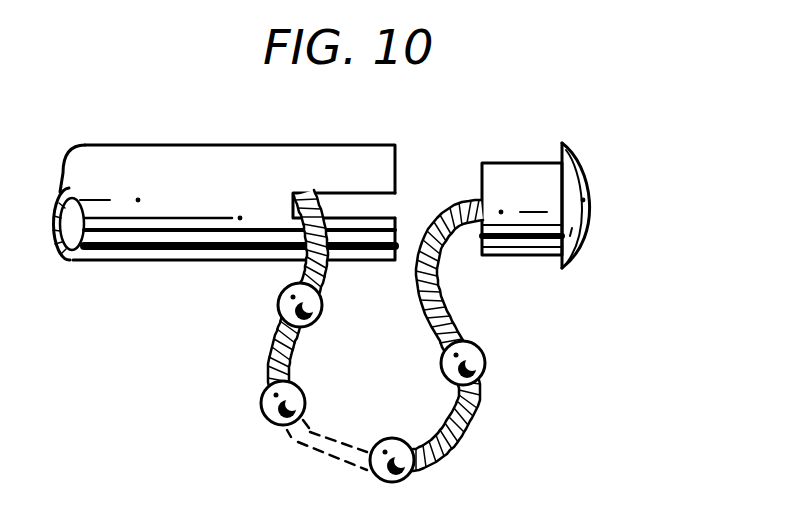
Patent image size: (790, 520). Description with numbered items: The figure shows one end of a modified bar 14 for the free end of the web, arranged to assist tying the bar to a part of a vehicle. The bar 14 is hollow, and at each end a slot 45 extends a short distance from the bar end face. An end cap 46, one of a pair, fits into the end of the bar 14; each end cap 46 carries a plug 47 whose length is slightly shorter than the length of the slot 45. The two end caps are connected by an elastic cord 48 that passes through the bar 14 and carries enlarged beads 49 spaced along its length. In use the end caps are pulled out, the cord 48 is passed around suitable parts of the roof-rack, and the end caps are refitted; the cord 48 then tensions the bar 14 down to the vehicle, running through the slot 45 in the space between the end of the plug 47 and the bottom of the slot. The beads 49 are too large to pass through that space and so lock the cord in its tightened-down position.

The bar 14 is at (175, 170).
The slot 45 is at (354, 200).
The end cap 46 is at (583, 178).
The plug 47 is at (510, 247).
The elastic cord 48 is at (485, 407).
The beads 49 is at (267, 405).